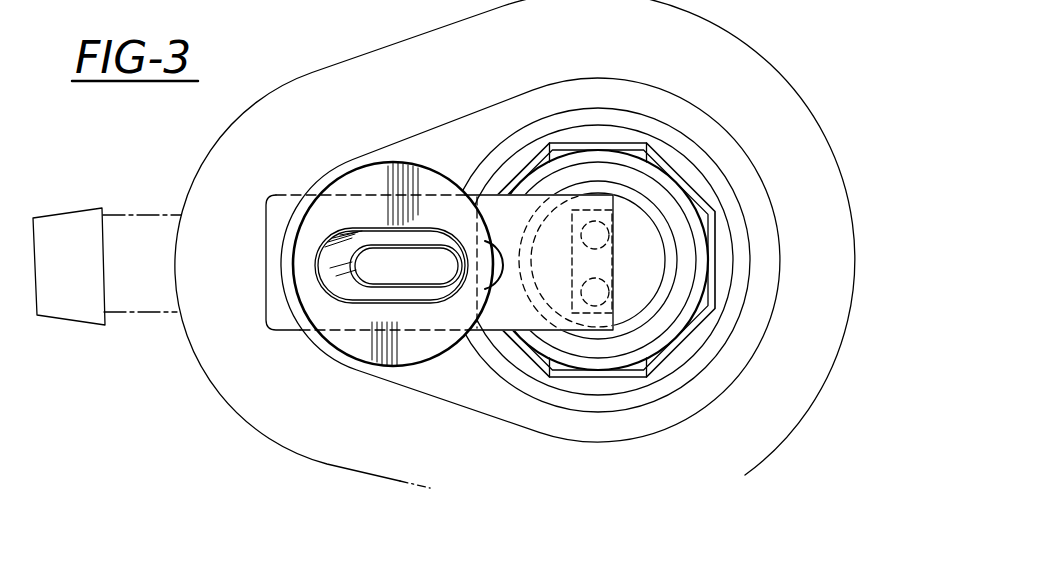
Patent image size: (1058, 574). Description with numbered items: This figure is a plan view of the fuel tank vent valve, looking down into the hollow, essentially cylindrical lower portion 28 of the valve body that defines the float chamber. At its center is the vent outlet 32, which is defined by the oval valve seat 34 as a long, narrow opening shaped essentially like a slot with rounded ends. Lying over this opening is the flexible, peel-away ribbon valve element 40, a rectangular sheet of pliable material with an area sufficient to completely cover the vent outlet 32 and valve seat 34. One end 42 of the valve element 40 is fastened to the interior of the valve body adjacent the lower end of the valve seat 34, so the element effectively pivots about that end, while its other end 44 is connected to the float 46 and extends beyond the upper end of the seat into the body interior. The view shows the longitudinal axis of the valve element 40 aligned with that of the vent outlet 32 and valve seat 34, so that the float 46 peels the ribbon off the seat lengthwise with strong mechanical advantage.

The lower portion 28 is at (630, 118).
The vent outlet 32 is at (443, 210).
The valve seat 34 is at (387, 247).
The valve element 40 is at (410, 257).
The end 42 is at (283, 325).
The other end 44 is at (593, 322).
The float 46 is at (683, 165).